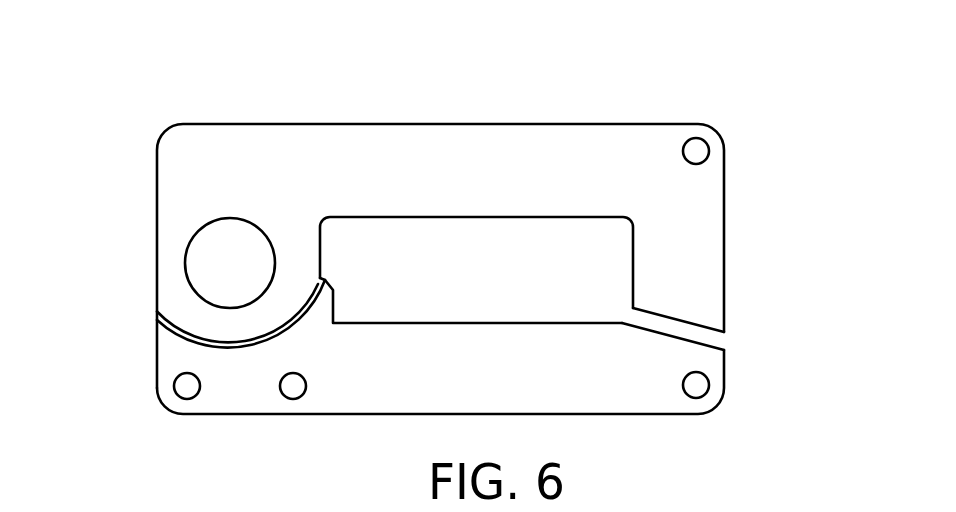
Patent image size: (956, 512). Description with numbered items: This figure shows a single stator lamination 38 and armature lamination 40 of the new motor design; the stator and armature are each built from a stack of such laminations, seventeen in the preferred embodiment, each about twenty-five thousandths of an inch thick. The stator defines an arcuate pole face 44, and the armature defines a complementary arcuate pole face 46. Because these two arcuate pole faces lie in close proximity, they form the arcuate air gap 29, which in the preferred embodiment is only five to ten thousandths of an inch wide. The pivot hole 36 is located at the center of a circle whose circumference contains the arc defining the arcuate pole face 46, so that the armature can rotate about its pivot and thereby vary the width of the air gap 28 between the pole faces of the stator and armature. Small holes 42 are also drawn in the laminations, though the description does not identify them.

The air gap 28 is at (707, 337).
The arcuate air gap 29 is at (160, 320).
The pivot hole 36 is at (223, 252).
The stator lamination 38 is at (370, 385).
The armature lamination 40 is at (507, 157).
The mounting holes 42 is at (697, 150).
The arcuate pole face 44 is at (247, 349).
The arcuate pole face 46 is at (297, 313).